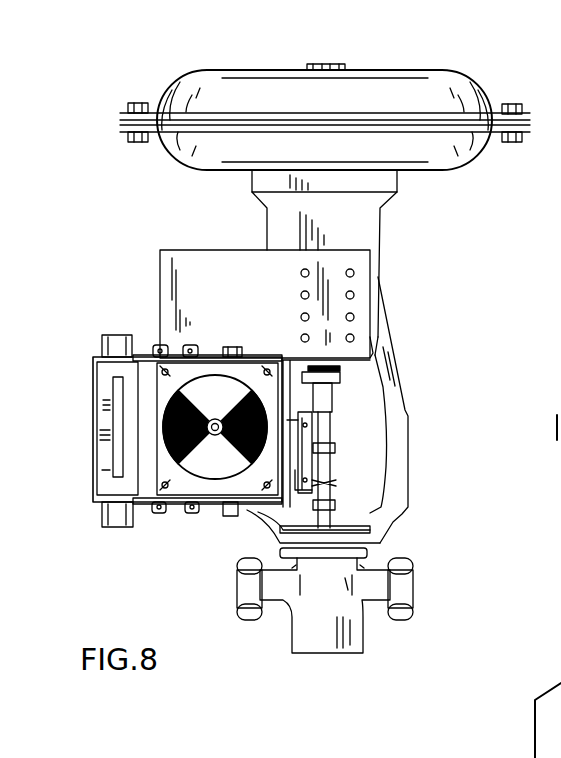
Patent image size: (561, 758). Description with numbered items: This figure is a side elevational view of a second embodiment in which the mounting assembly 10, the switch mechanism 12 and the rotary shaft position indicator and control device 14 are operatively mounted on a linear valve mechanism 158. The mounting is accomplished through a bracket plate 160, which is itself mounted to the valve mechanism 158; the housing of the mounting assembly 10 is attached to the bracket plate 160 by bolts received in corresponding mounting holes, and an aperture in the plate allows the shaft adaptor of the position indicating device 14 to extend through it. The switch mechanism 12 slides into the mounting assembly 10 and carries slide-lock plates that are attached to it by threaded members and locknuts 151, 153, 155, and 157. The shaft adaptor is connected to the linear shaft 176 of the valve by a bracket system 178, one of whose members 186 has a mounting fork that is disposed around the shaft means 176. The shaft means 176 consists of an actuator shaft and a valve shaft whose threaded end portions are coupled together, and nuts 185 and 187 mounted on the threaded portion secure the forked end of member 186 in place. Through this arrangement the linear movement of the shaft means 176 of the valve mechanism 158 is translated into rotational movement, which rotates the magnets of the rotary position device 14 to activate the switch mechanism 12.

The mounting assembly 10 is at (215, 520).
The switch mechanism 12 is at (85, 383).
The rotary shaft position indicator and control device 14 is at (247, 360).
The locknut 151 is at (191, 513).
The locknut 153 is at (158, 513).
The locknut 155 is at (192, 345).
The locknut 157 is at (158, 345).
The linear valve mechanism 158 is at (433, 72).
The bracket plate 160 is at (292, 311).
The linear shaft 176 is at (323, 402).
The bracket system 178 is at (334, 468).
The nut 185 is at (387, 523).
The member 186 is at (330, 483).
The nut 187 is at (335, 448).